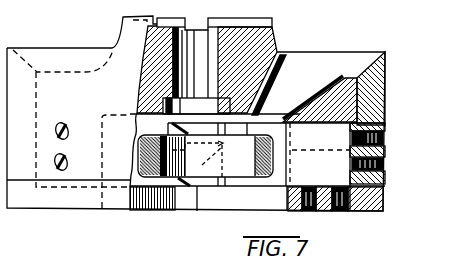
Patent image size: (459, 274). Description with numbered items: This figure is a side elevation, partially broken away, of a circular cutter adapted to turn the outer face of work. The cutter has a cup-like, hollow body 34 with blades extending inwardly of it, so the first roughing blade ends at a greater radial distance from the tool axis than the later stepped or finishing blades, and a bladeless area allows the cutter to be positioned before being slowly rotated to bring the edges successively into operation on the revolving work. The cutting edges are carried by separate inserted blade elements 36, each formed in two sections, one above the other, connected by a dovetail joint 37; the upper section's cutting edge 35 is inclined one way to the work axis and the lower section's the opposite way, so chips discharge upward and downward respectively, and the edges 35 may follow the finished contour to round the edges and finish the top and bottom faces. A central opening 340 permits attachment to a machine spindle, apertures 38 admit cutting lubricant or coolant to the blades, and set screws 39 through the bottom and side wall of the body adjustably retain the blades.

The central opening 340 is at (197, 28).
The apertures 38 is at (283, 88).
The cup-like hollow body 34 is at (382, 38).
The set screws 39 is at (384, 135).
The cutting edge 35 is at (196, 162).
The inserted blade elements 36 is at (203, 187).
The dovetail joint 37 is at (171, 152).